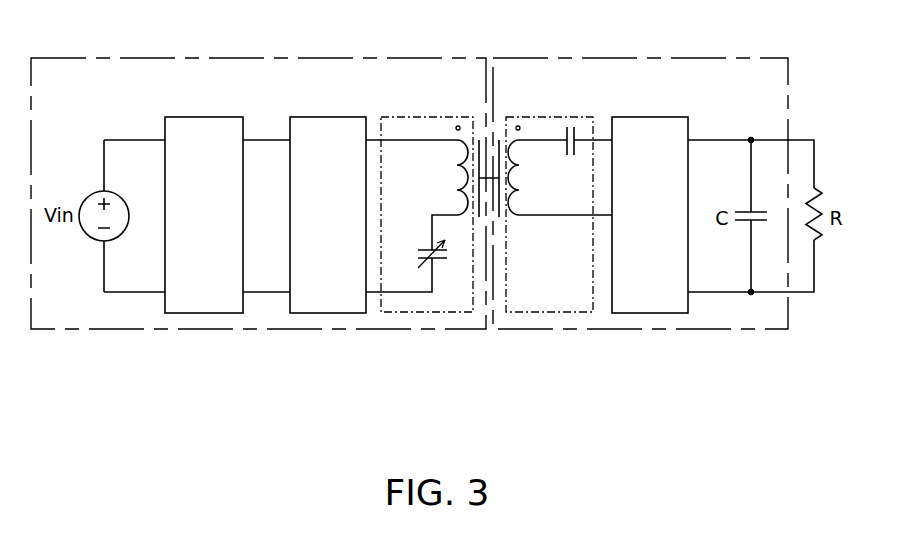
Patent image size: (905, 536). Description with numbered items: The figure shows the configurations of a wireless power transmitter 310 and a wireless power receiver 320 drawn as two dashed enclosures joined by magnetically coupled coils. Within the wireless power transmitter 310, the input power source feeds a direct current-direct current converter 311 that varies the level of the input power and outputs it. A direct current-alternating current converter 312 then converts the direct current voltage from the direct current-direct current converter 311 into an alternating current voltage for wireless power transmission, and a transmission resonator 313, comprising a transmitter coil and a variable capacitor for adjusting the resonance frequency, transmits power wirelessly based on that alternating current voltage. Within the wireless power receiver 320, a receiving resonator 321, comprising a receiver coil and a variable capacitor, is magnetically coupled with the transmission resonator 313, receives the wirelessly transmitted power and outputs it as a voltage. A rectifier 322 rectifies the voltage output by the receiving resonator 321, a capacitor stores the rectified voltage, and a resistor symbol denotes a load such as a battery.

The wireless power transmitter 310 is at (448, 58).
The direct current-direct current converter 311 is at (226, 226).
The direct current-alternating current converter 312 is at (350, 226).
The transmission resonator 313 is at (420, 116).
The wireless power receiver 320 is at (750, 58).
The receiving resonator 321 is at (558, 116).
The rectifier 322 is at (672, 226).